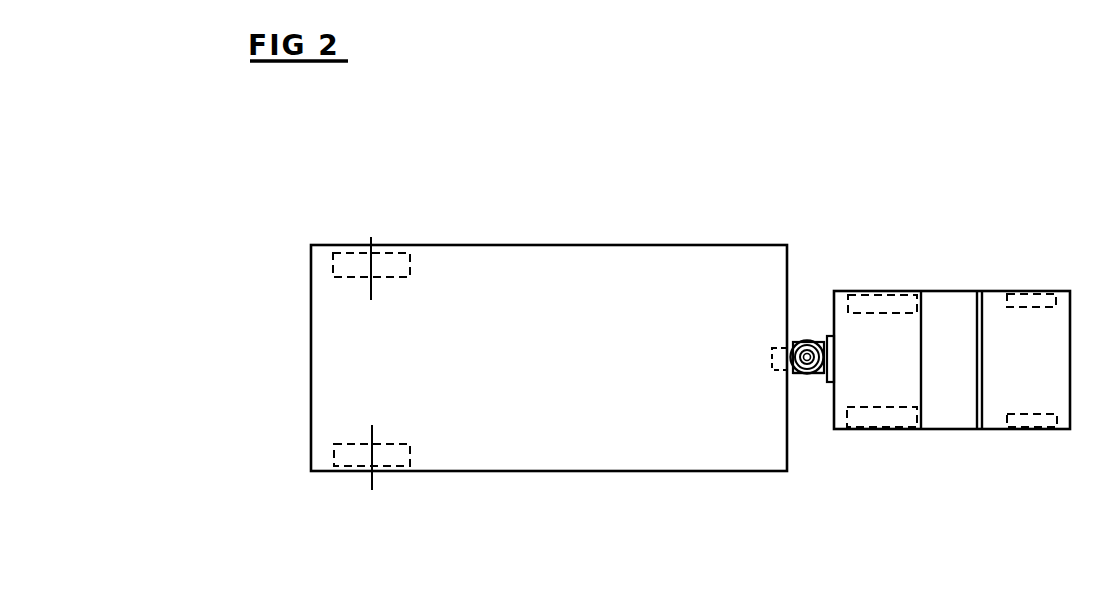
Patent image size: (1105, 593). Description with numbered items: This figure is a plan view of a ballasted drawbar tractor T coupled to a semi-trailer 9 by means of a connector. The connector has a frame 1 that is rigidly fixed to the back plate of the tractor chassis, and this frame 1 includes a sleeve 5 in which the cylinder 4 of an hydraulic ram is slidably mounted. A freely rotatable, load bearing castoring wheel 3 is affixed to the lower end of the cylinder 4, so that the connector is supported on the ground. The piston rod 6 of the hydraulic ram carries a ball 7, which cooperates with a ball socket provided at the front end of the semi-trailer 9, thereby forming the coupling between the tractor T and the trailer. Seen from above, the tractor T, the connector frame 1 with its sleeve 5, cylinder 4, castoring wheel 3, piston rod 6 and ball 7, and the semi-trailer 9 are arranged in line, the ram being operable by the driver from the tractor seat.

The semi-trailer 9 is at (485, 327).
The castoring wheel 3 is at (779, 348).
The ball 7 is at (806, 352).
The sleeve 5 is at (814, 341).
The piston rod 6 is at (806, 374).
The cylinder 4 is at (811, 376).
The frame 1 is at (837, 340).
The ballasted drawbar tractor T is at (945, 355).